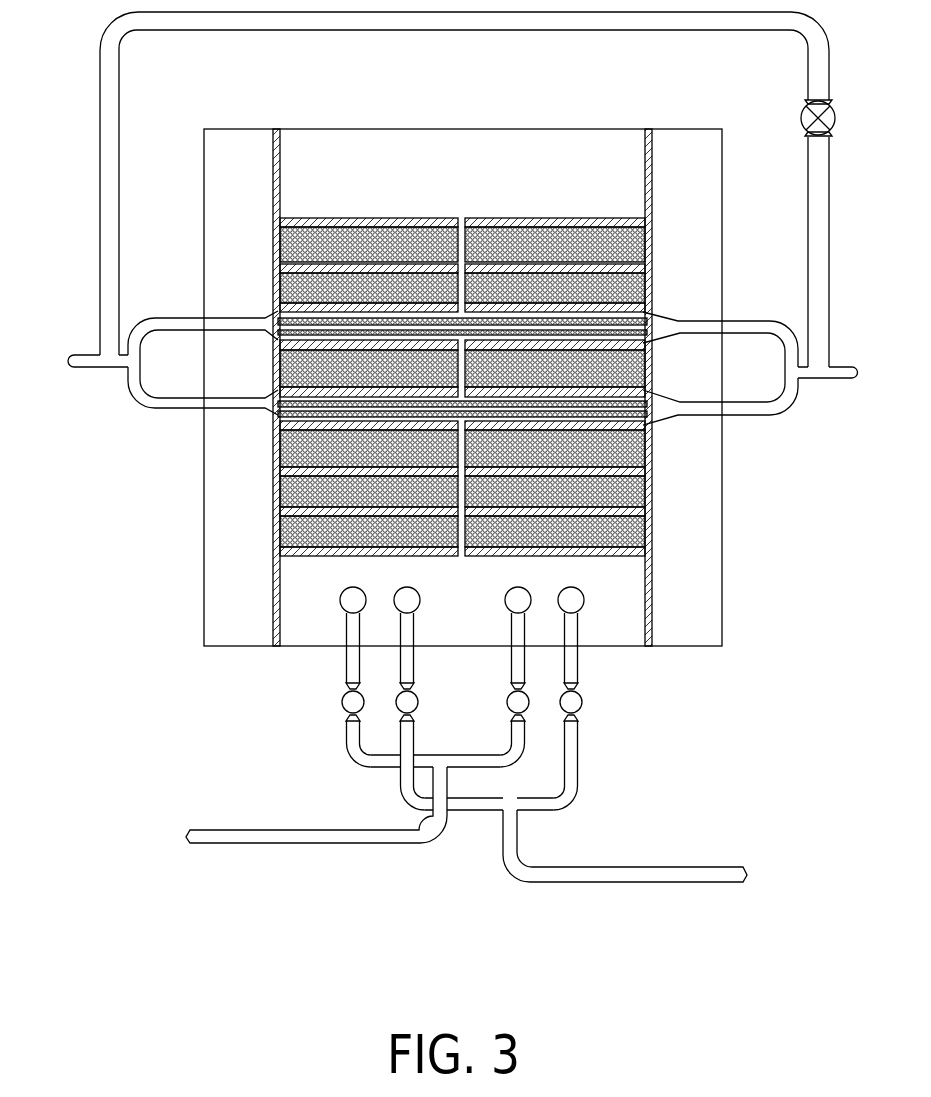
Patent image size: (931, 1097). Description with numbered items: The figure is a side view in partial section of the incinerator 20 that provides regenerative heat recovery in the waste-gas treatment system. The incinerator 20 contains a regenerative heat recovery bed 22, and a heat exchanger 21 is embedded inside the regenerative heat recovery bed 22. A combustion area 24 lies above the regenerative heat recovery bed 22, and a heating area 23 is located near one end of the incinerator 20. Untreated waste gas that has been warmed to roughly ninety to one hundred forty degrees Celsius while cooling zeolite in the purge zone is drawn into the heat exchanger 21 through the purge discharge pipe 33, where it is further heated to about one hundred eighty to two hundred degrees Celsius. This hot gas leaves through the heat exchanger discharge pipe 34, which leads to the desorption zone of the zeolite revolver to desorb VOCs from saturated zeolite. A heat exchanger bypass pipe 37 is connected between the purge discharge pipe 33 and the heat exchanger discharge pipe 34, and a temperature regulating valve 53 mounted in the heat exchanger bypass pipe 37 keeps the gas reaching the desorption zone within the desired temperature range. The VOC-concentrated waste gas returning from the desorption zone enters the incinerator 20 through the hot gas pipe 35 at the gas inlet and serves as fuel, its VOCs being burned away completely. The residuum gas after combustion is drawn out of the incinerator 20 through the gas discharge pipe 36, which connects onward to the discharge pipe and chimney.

The incinerator 20 is at (607, 128).
The heat exchanger 21 is at (622, 322).
The regenerative heat recovery bed 22 is at (295, 489).
The heating area 23 is at (499, 152).
The combustion area 24 is at (630, 250).
The purge discharge pipe 33 is at (106, 369).
The heat exchanger discharge pipe 34 is at (832, 380).
The hot gas pipe 35 is at (272, 829).
The gas discharge pipe 36 is at (649, 866).
The heat exchanger bypass pipe 37 is at (806, 58).
The temperature regulating valve 53 is at (802, 112).